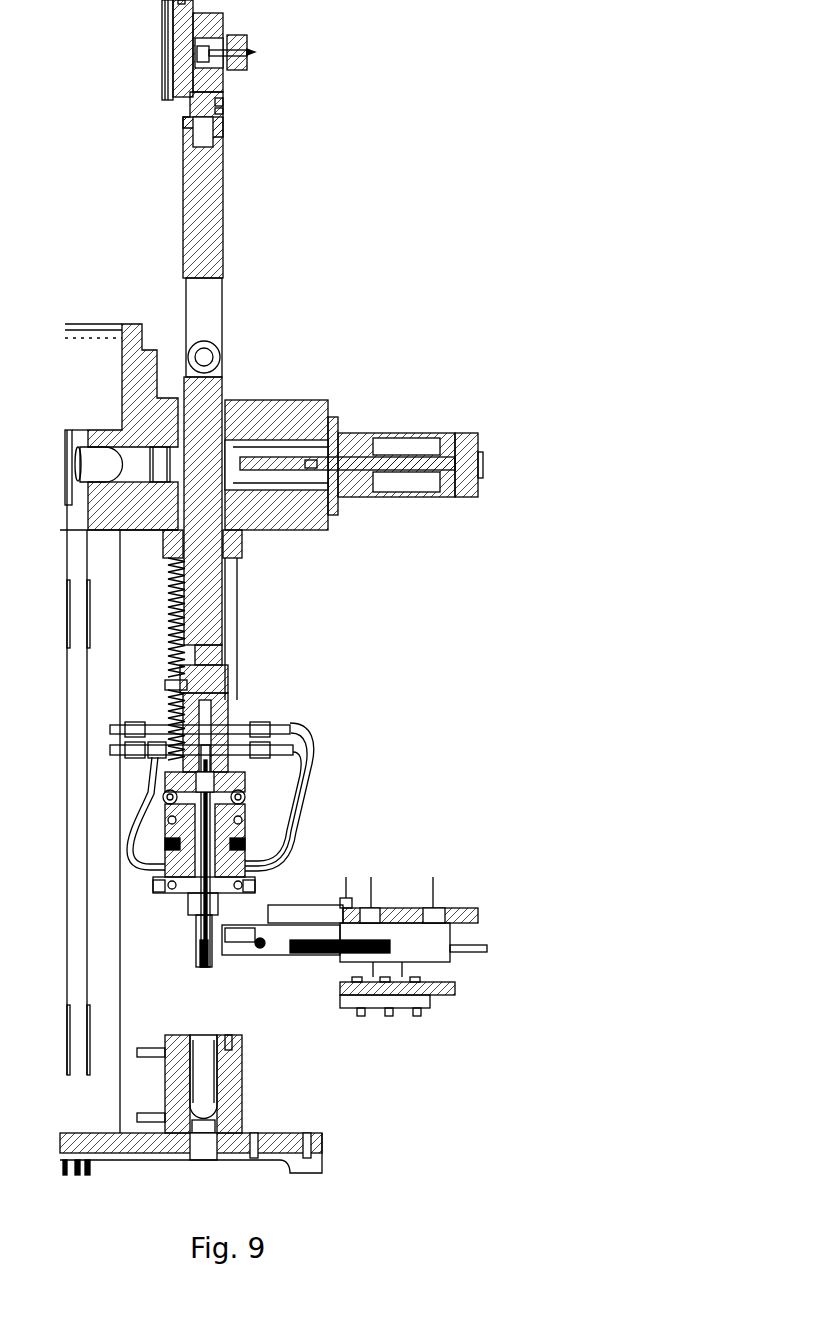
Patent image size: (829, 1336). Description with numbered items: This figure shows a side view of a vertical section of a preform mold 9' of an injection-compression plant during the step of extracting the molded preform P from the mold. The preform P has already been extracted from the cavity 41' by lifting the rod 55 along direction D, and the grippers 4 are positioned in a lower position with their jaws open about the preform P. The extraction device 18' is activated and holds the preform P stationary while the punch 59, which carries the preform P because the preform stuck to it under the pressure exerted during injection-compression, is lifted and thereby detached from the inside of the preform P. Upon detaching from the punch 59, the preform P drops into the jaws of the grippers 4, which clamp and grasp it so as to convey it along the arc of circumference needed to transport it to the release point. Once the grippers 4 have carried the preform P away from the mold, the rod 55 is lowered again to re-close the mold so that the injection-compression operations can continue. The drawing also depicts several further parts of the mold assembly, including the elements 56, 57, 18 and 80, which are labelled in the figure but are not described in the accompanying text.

The rod 55 is at (214, 200).
The pivot bearing 56 is at (218, 345).
The actuating cylinder 57 is at (303, 437).
The preform mold 9' is at (378, 502).
The guide bushing 18 is at (267, 564).
The extraction device 18' is at (281, 749).
The punch 59 is at (210, 863).
The grippers 4 is at (334, 867).
The preform P is at (207, 967).
The support plate 80 is at (425, 1003).
The cavity 41' is at (256, 1084).
The direction D is at (286, 30).